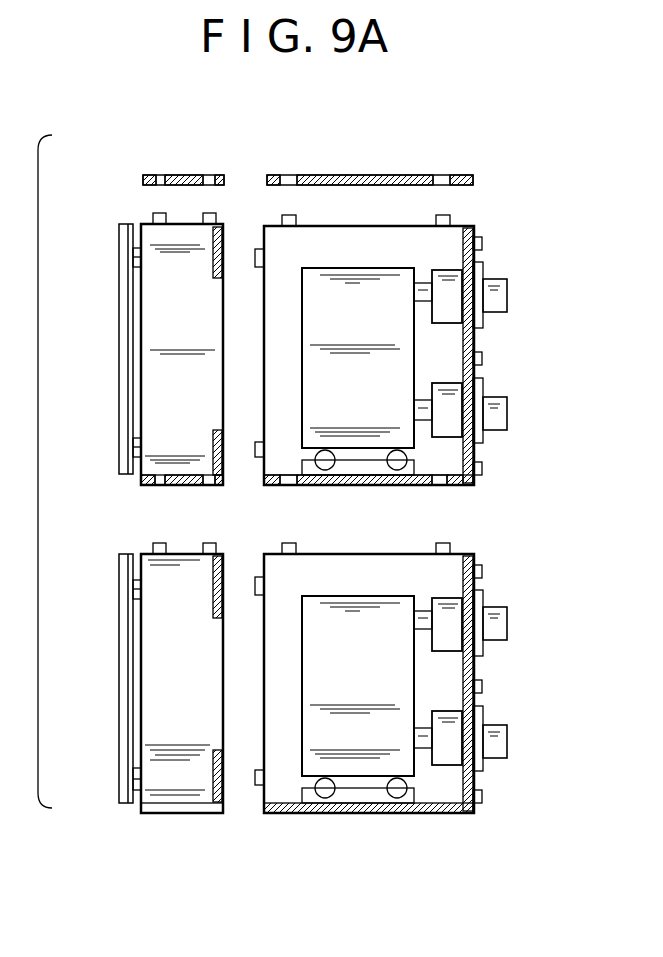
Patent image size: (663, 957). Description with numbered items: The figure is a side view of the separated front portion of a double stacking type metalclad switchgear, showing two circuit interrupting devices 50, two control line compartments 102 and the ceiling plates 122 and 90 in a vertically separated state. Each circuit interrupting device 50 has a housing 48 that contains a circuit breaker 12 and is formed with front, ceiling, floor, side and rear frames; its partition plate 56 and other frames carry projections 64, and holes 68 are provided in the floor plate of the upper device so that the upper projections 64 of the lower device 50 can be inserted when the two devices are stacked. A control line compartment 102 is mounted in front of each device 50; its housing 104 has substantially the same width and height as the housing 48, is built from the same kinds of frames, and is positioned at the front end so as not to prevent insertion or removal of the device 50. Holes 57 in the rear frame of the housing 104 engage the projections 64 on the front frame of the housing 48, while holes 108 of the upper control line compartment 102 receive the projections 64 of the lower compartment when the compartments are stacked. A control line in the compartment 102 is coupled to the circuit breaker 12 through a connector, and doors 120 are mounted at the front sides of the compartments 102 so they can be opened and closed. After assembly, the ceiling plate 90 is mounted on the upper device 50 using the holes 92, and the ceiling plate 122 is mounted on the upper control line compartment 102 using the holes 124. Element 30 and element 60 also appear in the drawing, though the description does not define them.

The circuit breaker 12 is at (365, 268).
The drive motor 30 is at (448, 322).
The housing 48 is at (275, 358).
The circuit interrupting device 50 is at (488, 256).
The partition plate 56 is at (475, 450).
The holes 57 is at (224, 262).
The bottom plate 60 is at (382, 486).
The projections 64 is at (483, 830).
The holes 68 is at (288, 486).
The ceiling plate 90 is at (366, 176).
The holes 92 is at (288, 176).
The control line compartment 102 is at (112, 353).
The housing 104 is at (148, 285).
The holes 108 is at (205, 486).
The doors 120 is at (118, 413).
The ceiling plate 122 is at (188, 176).
The holes 124 is at (148, 176).